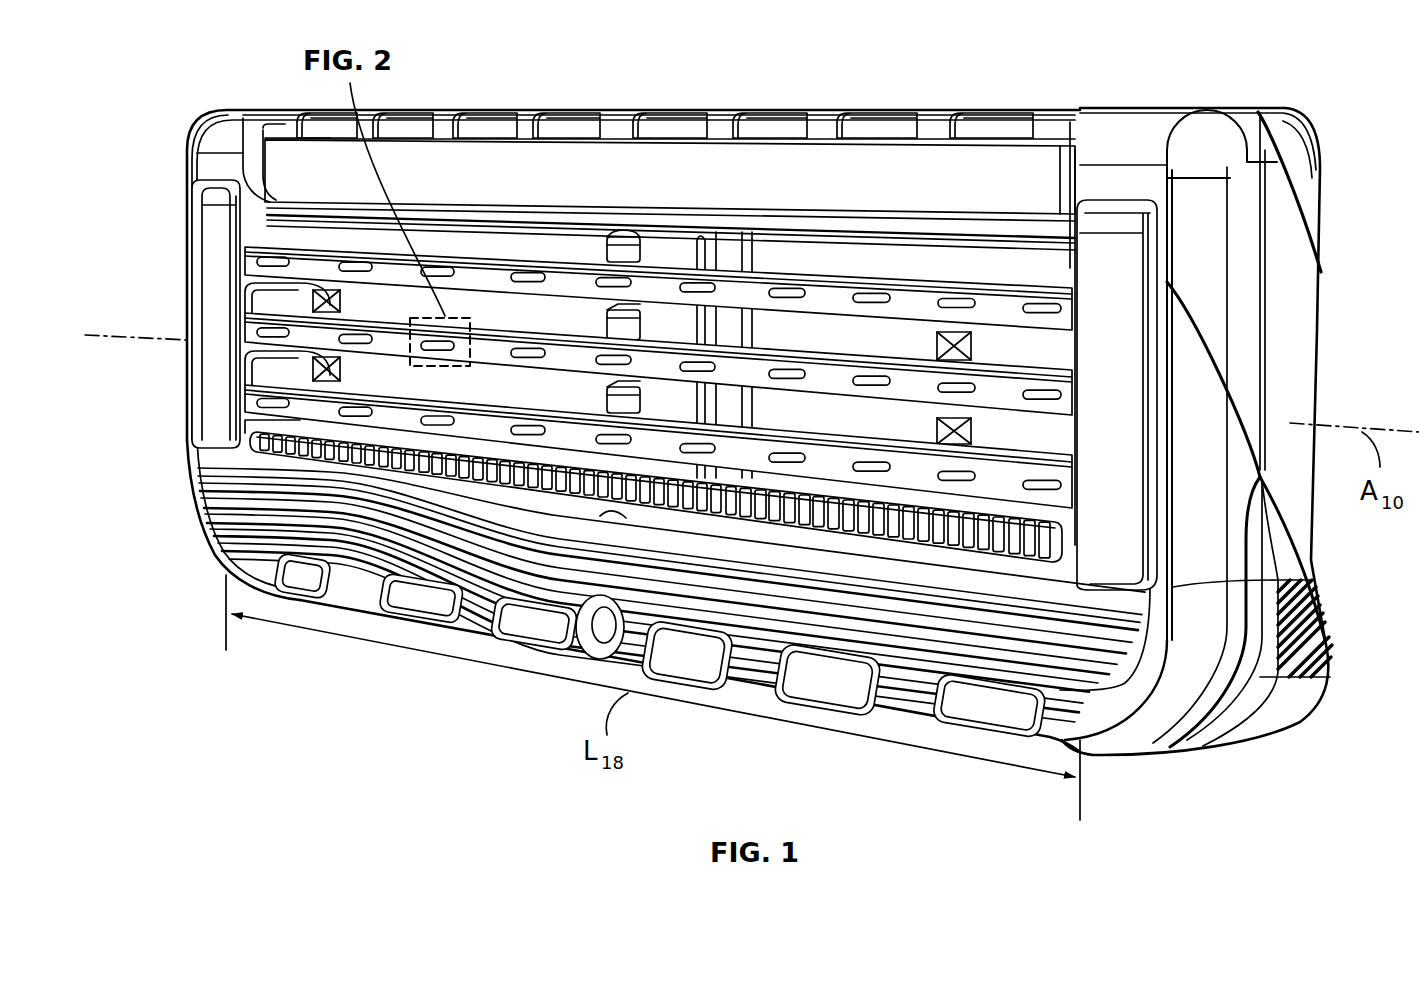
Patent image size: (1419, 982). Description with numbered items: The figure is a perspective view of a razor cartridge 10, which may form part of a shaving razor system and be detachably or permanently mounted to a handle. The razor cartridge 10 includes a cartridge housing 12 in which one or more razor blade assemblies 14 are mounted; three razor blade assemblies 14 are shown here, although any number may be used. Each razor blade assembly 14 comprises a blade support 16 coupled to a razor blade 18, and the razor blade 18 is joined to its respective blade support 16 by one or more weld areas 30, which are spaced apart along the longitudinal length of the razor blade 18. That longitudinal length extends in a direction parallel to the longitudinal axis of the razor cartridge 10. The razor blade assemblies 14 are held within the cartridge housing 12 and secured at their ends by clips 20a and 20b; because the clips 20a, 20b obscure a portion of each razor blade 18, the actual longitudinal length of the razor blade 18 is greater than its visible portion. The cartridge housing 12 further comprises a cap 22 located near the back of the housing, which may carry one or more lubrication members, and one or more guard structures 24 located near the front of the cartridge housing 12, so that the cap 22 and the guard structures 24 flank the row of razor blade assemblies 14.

The razor cartridge 10 is at (215, 65).
The cartridge housing 12 is at (1195, 133).
The razor blade assembly 14 is at (250, 290).
The blade support 16 is at (591, 398).
The razor blade 18 is at (1068, 488).
The clip 20a is at (213, 249).
The clip 20b is at (1117, 273).
The cap 22 is at (677, 102).
The guard structure 24 is at (207, 548).
The weld area 30 is at (790, 448).